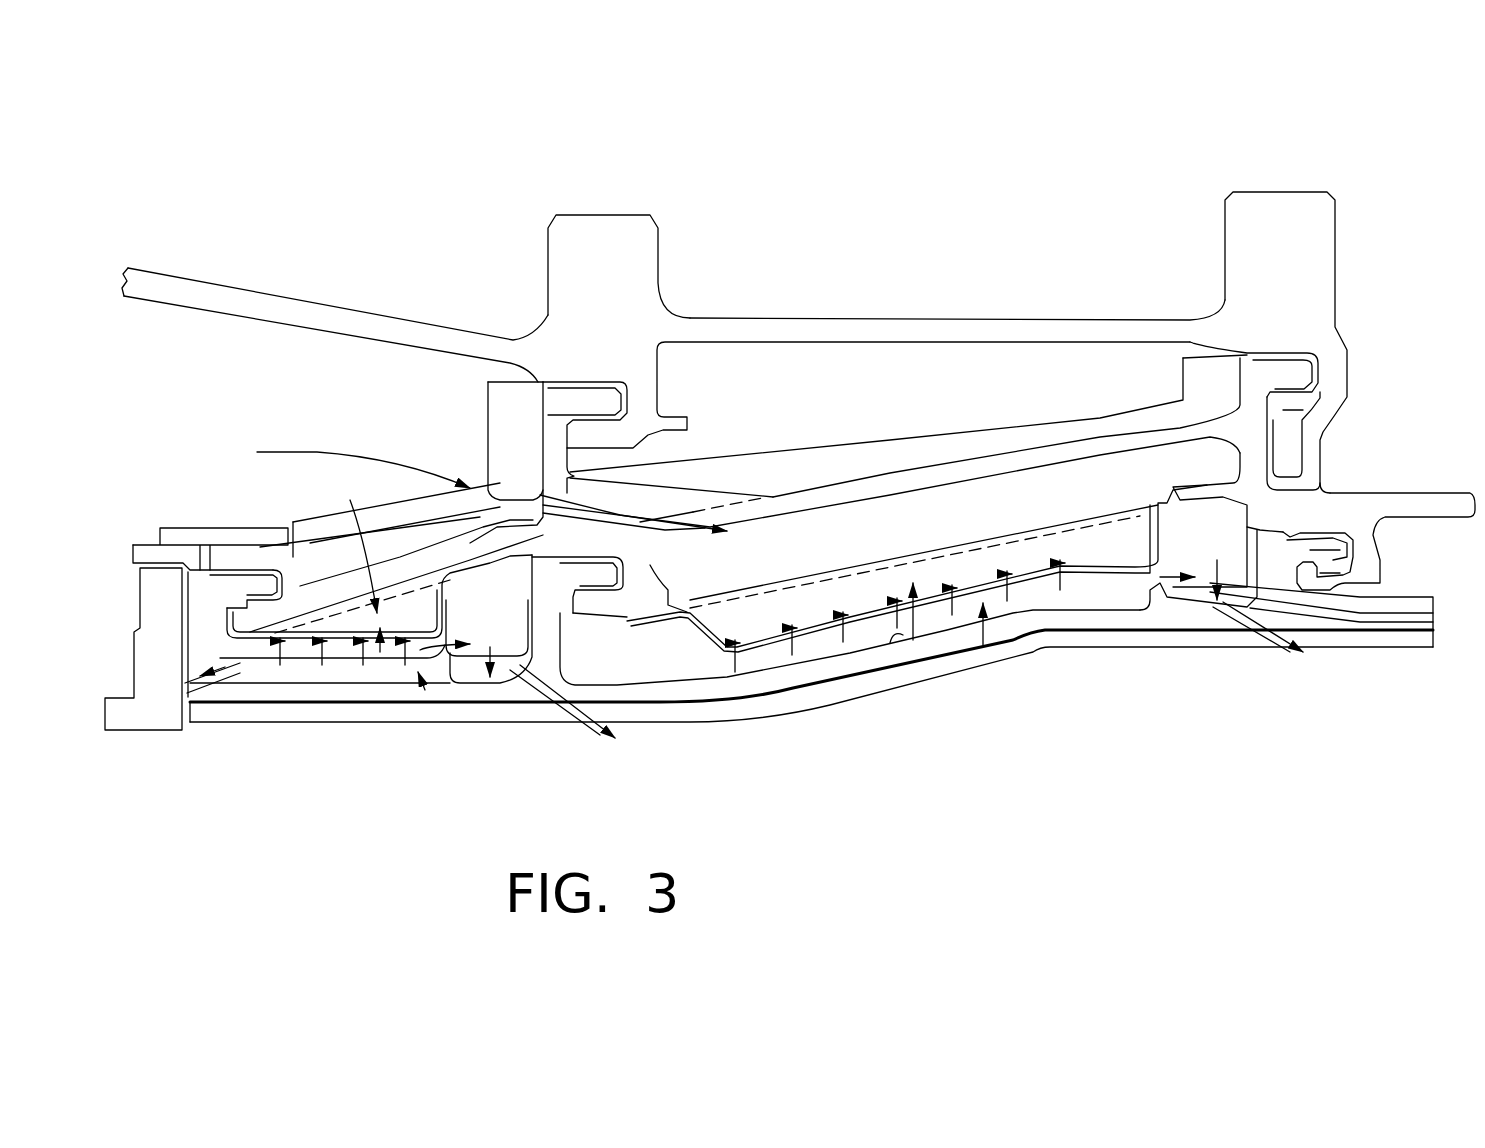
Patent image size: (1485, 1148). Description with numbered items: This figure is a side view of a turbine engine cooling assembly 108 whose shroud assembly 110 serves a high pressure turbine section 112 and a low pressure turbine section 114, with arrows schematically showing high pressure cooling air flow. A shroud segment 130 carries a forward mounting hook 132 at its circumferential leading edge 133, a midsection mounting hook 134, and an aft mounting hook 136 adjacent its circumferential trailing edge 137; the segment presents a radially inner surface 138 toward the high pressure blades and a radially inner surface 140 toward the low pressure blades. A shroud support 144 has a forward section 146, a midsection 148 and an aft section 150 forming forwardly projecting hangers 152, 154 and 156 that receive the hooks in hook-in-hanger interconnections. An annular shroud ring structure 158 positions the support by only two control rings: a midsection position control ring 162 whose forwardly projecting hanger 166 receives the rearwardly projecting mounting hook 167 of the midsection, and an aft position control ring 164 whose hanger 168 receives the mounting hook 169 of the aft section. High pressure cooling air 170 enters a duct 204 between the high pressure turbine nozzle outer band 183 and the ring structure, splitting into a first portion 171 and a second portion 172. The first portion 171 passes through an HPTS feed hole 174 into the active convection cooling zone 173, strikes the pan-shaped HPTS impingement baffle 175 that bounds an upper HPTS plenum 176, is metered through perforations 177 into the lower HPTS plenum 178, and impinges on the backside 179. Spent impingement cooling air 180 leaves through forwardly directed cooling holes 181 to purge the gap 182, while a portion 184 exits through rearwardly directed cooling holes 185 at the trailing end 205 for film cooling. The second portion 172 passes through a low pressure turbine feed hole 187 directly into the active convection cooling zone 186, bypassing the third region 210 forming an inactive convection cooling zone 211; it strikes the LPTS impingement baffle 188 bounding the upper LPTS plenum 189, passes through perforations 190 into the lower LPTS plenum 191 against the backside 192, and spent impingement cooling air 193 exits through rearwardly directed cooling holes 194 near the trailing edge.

The turbine engine cooling assembly 108 is at (625, 183).
The shroud assembly 110 is at (252, 158).
The high pressure turbine section 112 is at (258, 352).
The low pressure turbine section 114 is at (1128, 353).
The shroud segment 130 is at (1067, 640).
The forward mounting hook 132 is at (258, 590).
The circumferential leading edge 133 is at (195, 793).
The midsection mounting hook 134 is at (670, 612).
The aft mounting hook 136 is at (1328, 550).
The circumferential trailing edge 137 is at (1195, 700).
The radially inner surface of high pressure turbine section 138 is at (313, 727).
The radially inner surface of low pressure turbine section 140 is at (1385, 645).
The shroud support 144 is at (925, 475).
The forward section 146 is at (295, 557).
The midsection 148 is at (557, 547).
The aft section 150 is at (1318, 490).
The forward hanger 152 is at (255, 613).
The midsection hanger 154 is at (590, 603).
The aft hanger 156 is at (1322, 572).
The shroud ring structure 158 is at (1043, 318).
The midsection position control ring 162 is at (648, 250).
The aft position control ring 164 is at (1320, 245).
The forwardly projecting hanger 166 is at (600, 433).
The rearwardly projecting mounting hook 167 is at (588, 402).
The forwardly projecting hanger 168 is at (1283, 410).
The rearwardly projecting mounting hook 169 is at (1283, 370).
The high pressure cooling air 170 is at (275, 452).
The first portion of high pressure cooling air 171 is at (363, 489).
The second portion of high pressure cooling air 172 is at (402, 457).
The high pressure turbine section active convection cooling zone 173 is at (407, 612).
The HPTS feed hole 174 is at (367, 541).
The HPTS impingement baffle 175 is at (447, 613).
The upper HPTS plenum 176 is at (380, 660).
The perforations 177 is at (308, 653).
The lower HPTS plenum 178 is at (420, 690).
The backside of shroud segment 179 is at (390, 667).
The spent impingement cooling air 180 is at (195, 707).
The forwardly directed cooling holes 181 is at (183, 700).
The gap 182 is at (188, 735).
The high pressure turbine nozzle outer band 183 is at (157, 730).
The portion of high pressure cooling air 184 is at (597, 730).
The rearwardly directed cooling holes 185 is at (593, 713).
The low pressure turbine section active convection cooling zone 186 is at (920, 527).
The low pressure turbine feed hole 187 is at (650, 565).
The LPTS impingement baffle 188 is at (1138, 570).
The upper LPTS plenum 189 is at (913, 605).
The perforations 190 is at (800, 627).
The lower LPTS plenum 191 is at (985, 610).
The backside of shroud segment 192 is at (893, 640).
The spent impingement cooling air 193 is at (1278, 650).
The rearwardly directed cooling holes 194 is at (1307, 657).
The duct 204 is at (208, 372).
The trailing end of high pressure turbine section 205 is at (572, 752).
The third region 210 is at (898, 391).
The inactive convection cooling zone 211 is at (800, 370).